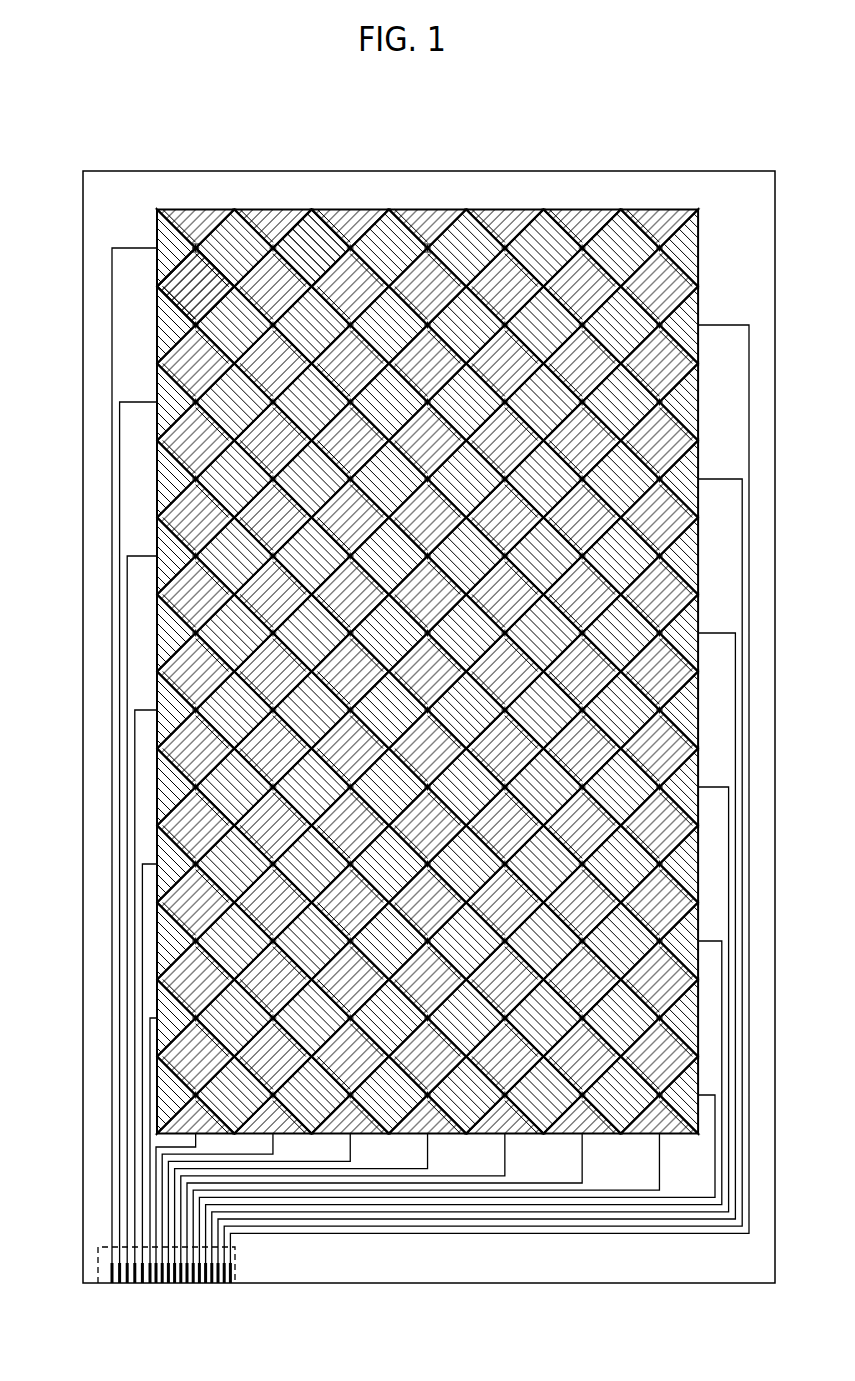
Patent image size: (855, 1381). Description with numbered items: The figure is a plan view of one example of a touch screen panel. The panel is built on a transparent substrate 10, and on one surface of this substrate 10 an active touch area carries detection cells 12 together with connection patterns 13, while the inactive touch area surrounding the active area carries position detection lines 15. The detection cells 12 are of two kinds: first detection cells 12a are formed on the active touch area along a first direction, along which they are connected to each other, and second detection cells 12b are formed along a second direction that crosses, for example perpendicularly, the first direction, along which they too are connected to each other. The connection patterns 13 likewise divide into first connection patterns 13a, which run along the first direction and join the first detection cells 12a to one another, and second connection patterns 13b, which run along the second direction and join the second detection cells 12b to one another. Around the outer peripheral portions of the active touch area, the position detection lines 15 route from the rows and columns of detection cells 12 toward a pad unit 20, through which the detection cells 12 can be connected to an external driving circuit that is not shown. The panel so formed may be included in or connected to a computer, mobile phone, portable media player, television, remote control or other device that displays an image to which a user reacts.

The transparent substrate 10 is at (573, 171).
The detection cells 12 is at (427, 609).
The first detection cells 12a is at (188, 256).
The second detection cells 12b is at (235, 235).
The connection patterns 13 is at (427, 609).
The first connection patterns 13a is at (325, 240).
The second connection patterns 13b is at (459, 189).
The position detection lines 15 is at (83, 317).
The pad unit 20 is at (237, 1265).